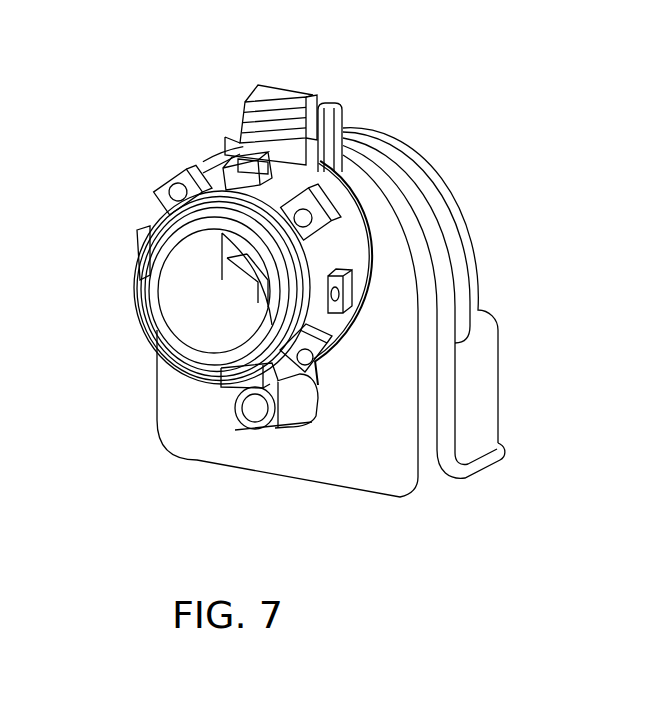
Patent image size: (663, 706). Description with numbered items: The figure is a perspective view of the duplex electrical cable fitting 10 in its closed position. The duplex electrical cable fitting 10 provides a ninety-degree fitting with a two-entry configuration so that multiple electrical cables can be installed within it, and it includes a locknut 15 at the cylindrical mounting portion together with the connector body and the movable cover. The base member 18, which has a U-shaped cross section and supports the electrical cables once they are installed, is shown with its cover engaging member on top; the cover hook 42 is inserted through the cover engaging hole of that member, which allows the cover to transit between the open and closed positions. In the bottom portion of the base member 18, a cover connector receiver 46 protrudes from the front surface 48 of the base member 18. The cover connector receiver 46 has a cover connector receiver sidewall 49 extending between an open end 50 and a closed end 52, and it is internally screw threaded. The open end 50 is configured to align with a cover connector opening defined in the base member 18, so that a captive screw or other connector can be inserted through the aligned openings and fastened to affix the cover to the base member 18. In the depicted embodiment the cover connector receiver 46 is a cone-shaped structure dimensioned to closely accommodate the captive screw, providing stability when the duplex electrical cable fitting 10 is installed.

The duplex electrical cable fitting 10 is at (192, 137).
The locknut 15 is at (160, 190).
The base member 18 is at (385, 316).
The cover hook 42 is at (274, 110).
The cover connector receiver 46 is at (285, 418).
The front surface 48 is at (373, 455).
The cover connector receiver sidewall 49 is at (300, 403).
The open end 50 is at (320, 400).
The closed end 52 is at (255, 408).